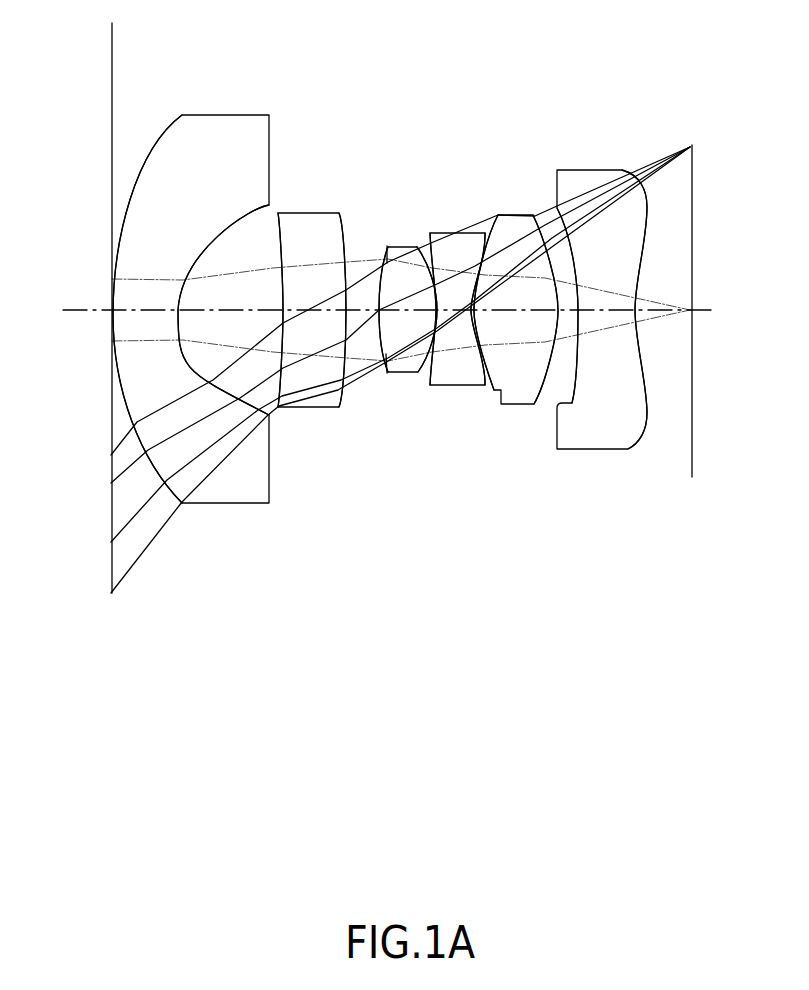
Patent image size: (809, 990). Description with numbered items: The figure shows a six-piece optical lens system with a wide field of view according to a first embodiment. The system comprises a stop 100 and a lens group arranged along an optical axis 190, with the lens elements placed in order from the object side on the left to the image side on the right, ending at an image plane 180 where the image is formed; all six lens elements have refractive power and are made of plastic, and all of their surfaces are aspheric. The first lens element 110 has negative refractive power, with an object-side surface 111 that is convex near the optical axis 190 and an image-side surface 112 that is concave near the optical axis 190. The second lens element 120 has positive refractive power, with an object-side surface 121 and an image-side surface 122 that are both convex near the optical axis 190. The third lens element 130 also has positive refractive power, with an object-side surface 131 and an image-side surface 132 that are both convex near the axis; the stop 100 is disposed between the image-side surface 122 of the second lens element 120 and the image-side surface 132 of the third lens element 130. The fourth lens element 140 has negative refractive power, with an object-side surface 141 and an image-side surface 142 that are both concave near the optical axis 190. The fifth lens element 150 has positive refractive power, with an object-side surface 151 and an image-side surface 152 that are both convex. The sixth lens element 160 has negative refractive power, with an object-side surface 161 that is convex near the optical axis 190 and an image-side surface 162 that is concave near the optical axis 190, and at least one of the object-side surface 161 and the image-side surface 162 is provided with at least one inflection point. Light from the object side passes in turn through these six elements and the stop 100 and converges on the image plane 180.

The stop 100 is at (378, 245).
The first lens element 110 is at (228, 104).
The object-side surface of the first lens element 111 is at (110, 455).
The image-side surface of the first lens element 112 is at (268, 463).
The second lens element 120 is at (308, 203).
The object-side surface of the second lens element 121 is at (281, 408).
The image-side surface of the second lens element 122 is at (344, 386).
The third lens element 130 is at (400, 237).
The object-side surface of the third lens element 131 is at (385, 366).
The image-side surface of the third lens element 132 is at (418, 374).
The fourth lens element 140 is at (459, 223).
The object-side surface of the fourth lens element 141 is at (431, 386).
The image-side surface of the fourth lens element 142 is at (484, 386).
The fifth lens element 150 is at (514, 205).
The object-side surface of the fifth lens element 151 is at (495, 391).
The image-side surface of the fifth lens element 152 is at (540, 404).
The sixth lens element 160 is at (594, 160).
The object-side surface of the sixth lens element 161 is at (572, 403).
The image-side surface of the sixth lens element 162 is at (640, 443).
The image plane 180 is at (692, 395).
The optical axis 190 is at (83, 308).